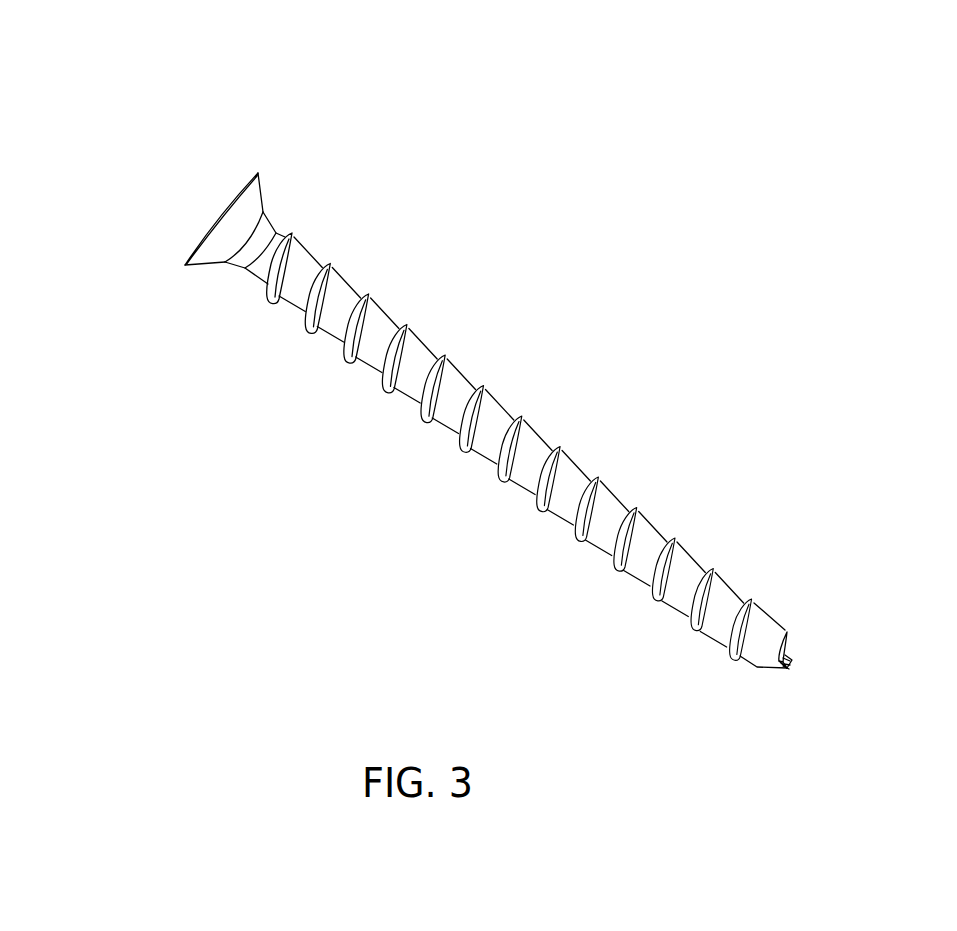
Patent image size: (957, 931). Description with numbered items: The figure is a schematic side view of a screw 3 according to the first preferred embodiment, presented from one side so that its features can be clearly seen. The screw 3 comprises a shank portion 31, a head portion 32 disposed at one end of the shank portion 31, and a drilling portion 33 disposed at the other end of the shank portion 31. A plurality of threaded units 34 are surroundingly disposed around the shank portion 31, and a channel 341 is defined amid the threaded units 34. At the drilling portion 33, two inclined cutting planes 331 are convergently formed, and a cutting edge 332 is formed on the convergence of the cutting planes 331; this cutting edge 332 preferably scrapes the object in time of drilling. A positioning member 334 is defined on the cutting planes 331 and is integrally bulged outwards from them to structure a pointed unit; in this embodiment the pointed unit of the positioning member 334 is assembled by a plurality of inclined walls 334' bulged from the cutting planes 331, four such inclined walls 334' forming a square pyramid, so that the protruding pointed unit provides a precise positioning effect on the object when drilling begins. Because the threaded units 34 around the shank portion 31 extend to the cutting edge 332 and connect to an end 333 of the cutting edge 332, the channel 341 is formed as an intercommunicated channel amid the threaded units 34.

The screw 3 is at (537, 249).
The shank portion 31 is at (483, 460).
The head portion 32 is at (262, 177).
The drilling portion 33 is at (753, 675).
The threaded units 34 is at (610, 573).
The channel 341 is at (764, 608).
The inclined cutting planes 331 is at (784, 660).
The cutting edge 332 is at (782, 667).
The end of the cutting edge 333 is at (786, 658).
The positioning member 334 is at (859, 692).
The inclined walls 334' is at (840, 668).